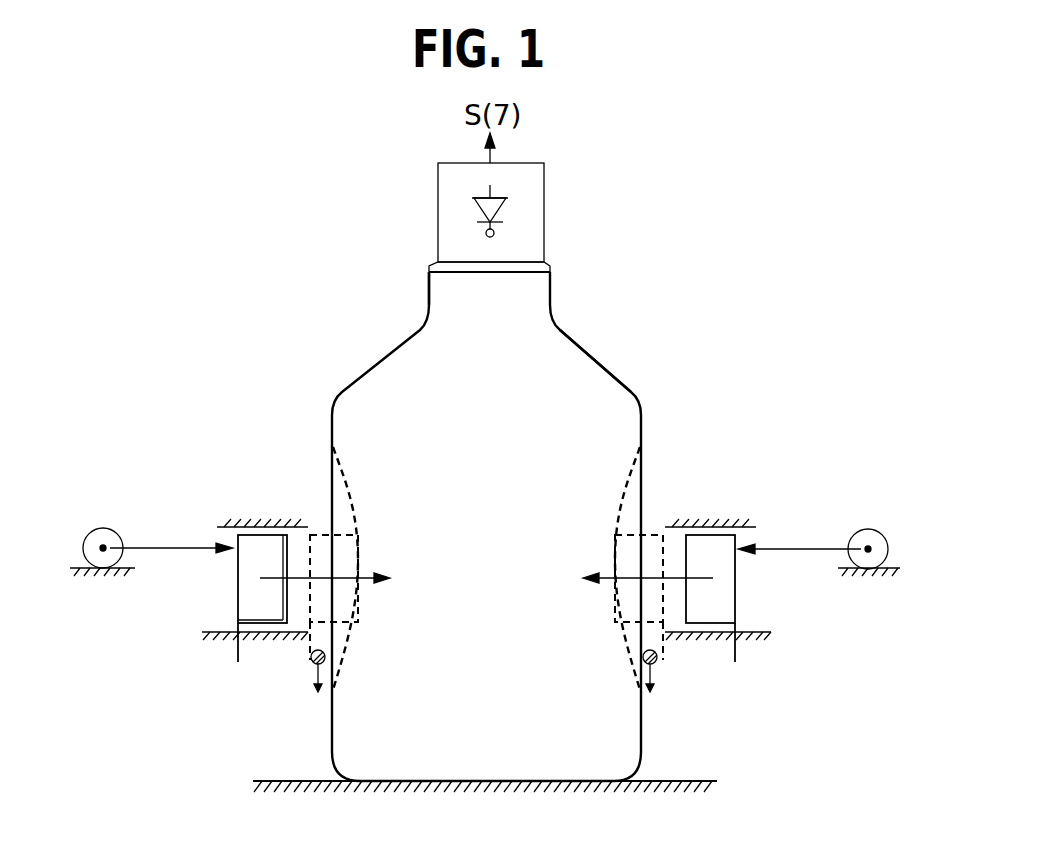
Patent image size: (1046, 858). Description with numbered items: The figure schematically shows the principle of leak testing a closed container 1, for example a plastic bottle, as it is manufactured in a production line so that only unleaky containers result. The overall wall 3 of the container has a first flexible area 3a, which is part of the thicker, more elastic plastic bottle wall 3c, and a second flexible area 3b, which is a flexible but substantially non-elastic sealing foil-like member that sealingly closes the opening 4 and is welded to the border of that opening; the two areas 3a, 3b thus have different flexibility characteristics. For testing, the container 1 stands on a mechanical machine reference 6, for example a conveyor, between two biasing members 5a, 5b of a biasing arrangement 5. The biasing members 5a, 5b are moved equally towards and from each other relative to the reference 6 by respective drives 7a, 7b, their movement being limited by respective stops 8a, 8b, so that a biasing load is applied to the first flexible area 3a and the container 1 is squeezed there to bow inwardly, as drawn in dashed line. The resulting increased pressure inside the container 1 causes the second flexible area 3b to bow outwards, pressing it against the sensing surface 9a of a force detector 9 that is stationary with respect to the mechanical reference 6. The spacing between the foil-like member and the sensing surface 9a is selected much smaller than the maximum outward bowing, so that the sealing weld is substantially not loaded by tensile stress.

The closed container 1 is at (612, 310).
The container wall 3 is at (553, 327).
The first flexible area 3a is at (642, 515).
The second flexible area 3b is at (455, 274).
The bottle wall 3c is at (612, 367).
The opening 4 is at (536, 271).
The biasing arrangement 5 is at (218, 585).
The first biasing member 5a is at (258, 635).
The second biasing member 5b is at (716, 635).
The mechanical machine reference 6 is at (263, 784).
The first drive 7a is at (103, 528).
The second drive 7b is at (868, 528).
The first stop 8a is at (313, 665).
The second stop 8b is at (655, 665).
The force detector 9 is at (544, 233).
The sensing surface 9a is at (517, 262).